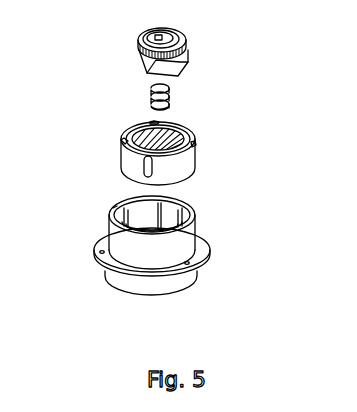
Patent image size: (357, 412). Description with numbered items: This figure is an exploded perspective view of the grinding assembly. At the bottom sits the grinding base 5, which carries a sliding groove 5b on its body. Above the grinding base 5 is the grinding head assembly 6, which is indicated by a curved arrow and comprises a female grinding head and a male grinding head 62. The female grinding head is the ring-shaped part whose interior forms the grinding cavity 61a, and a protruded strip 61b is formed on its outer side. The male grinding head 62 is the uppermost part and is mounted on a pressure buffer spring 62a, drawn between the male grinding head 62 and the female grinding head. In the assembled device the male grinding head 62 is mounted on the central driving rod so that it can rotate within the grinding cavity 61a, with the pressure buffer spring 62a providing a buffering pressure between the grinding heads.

The grinding base 5 is at (172, 253).
The sliding groove 5b is at (113, 210).
The grinding head assembly 6 is at (128, 110).
The grinding cavity 61a is at (123, 140).
The protruded strip 61b is at (148, 170).
The male grinding head 62 is at (182, 53).
The pressure buffer spring 62a is at (170, 100).